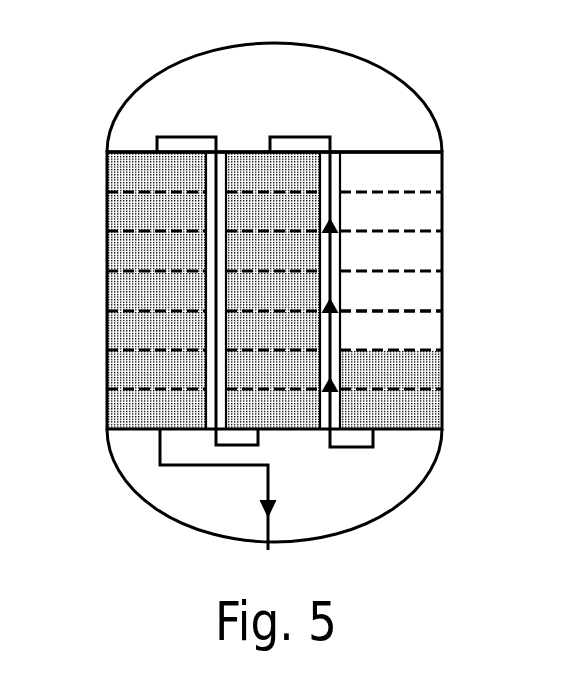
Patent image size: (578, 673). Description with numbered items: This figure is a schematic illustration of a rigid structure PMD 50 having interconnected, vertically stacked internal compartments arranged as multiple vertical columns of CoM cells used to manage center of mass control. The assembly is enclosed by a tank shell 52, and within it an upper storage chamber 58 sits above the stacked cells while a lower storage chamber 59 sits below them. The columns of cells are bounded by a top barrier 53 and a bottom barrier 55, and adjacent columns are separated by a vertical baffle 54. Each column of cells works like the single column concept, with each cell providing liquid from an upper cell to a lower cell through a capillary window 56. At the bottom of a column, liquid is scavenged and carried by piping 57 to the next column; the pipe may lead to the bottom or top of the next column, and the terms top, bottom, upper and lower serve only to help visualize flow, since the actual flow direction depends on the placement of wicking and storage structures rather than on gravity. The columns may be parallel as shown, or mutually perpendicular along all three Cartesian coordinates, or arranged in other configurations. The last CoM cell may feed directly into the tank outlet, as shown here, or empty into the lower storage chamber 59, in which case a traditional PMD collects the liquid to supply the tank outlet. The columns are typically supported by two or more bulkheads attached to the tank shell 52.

The rigid structure PMD 50 is at (275, 277).
The tank shell 52 is at (157, 82).
The top barrier 53 is at (393, 150).
The vertical baffle 54 is at (341, 207).
The bottom barrier 55 is at (137, 430).
The capillary window 56 is at (390, 312).
The piping 57 is at (353, 448).
The upper storage chamber 58 is at (274, 110).
The lower storage chamber 59 is at (250, 489).